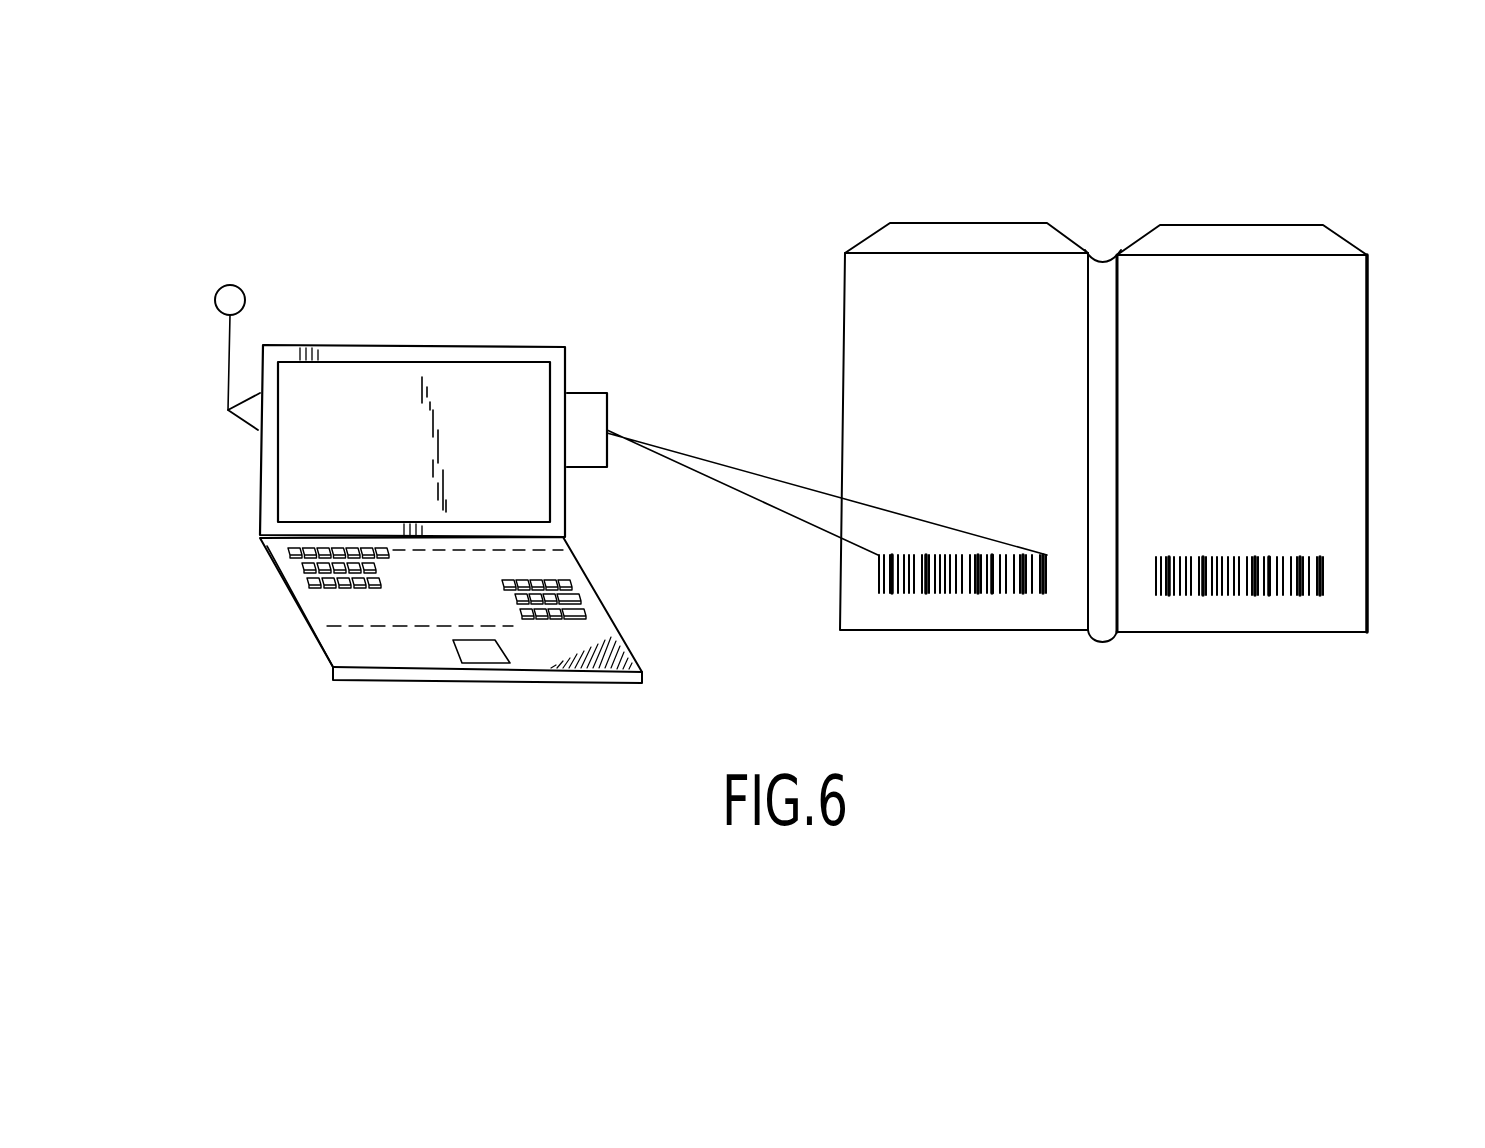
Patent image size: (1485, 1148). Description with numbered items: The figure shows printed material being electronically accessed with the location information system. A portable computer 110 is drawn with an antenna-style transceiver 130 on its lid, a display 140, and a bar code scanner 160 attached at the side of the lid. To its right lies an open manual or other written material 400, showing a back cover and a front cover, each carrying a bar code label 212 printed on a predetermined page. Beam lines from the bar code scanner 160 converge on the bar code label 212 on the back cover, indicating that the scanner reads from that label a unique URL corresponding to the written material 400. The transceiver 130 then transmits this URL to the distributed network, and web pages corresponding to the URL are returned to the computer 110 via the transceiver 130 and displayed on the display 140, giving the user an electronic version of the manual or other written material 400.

The computer 110 is at (282, 585).
The transceiver 130 is at (245, 422).
The display 140 is at (530, 487).
The bar code scanner 160 is at (587, 393).
The bar code label 212 is at (950, 594).
The written material 400 is at (1156, 455).